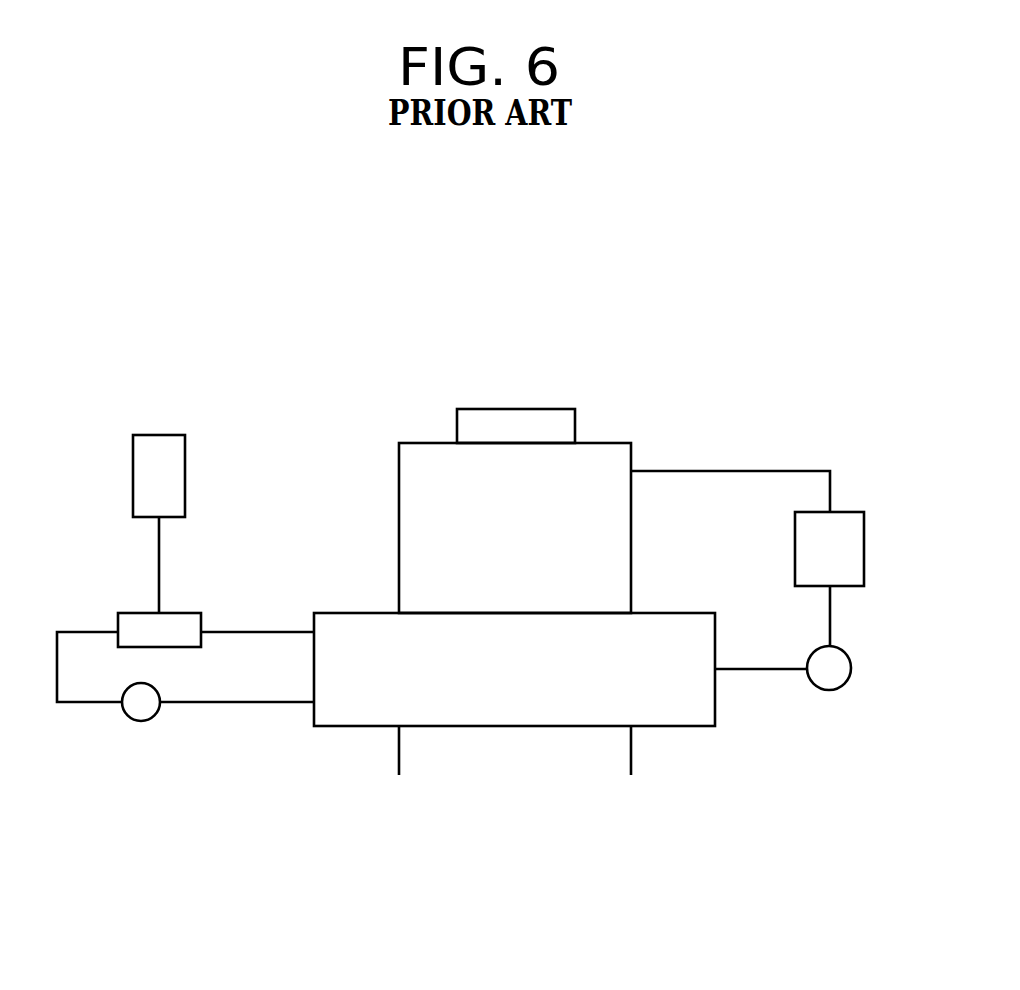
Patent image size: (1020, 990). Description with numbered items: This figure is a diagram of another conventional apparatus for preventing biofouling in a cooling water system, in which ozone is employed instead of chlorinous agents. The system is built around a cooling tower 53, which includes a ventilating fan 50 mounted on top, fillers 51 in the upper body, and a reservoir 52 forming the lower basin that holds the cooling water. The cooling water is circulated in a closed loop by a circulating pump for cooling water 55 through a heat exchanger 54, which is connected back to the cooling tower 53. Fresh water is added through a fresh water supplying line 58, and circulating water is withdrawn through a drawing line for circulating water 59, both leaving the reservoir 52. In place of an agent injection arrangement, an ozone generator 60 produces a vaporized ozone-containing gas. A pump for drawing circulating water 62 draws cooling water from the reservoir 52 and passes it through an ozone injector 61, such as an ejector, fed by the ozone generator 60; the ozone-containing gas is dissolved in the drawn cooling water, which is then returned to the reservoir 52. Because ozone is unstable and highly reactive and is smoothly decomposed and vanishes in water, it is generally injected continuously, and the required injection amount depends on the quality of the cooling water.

The ventilating fan 50 is at (533, 420).
The fillers 51 is at (428, 458).
The reservoir 52 is at (342, 623).
The cooling tower 53 is at (494, 440).
The heat exchanger 54 is at (848, 524).
The circulating pump for cooling water 55 is at (840, 677).
The fresh water supplying line 58 is at (398, 752).
The drawing line for circulating water 59 is at (628, 752).
The ozone generator 60 is at (163, 445).
The ozone injector 61 is at (139, 622).
The pump for drawing circulating water 62 is at (142, 712).